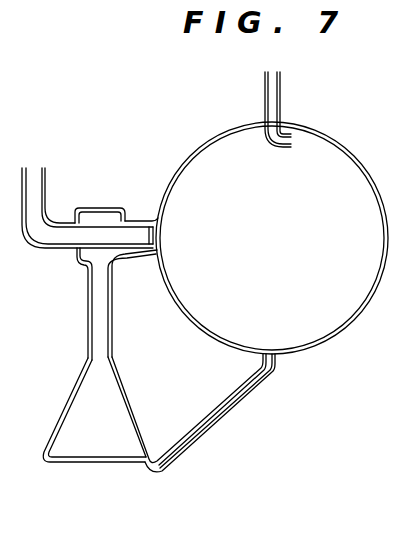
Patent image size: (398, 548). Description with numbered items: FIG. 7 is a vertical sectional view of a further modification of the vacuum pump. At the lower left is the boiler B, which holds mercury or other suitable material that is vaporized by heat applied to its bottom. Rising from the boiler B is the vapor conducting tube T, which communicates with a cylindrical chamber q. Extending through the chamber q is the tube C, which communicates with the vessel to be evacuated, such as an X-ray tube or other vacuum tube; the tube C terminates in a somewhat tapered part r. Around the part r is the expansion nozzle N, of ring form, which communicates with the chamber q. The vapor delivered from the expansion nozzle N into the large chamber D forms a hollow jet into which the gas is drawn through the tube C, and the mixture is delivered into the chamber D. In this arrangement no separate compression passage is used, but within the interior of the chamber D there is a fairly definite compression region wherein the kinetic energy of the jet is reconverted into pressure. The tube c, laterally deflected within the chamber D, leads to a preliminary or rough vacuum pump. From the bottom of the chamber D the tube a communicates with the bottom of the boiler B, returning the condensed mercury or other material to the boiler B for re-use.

The chamber D is at (216, 129).
The tube c is at (280, 84).
The tube C is at (45, 174).
The cylindrical chamber q is at (95, 208).
The expansion nozzle N is at (140, 221).
The tapered part r is at (154, 248).
The vapor conducting tube T is at (88, 296).
The boiler B is at (66, 405).
The tube a is at (226, 413).